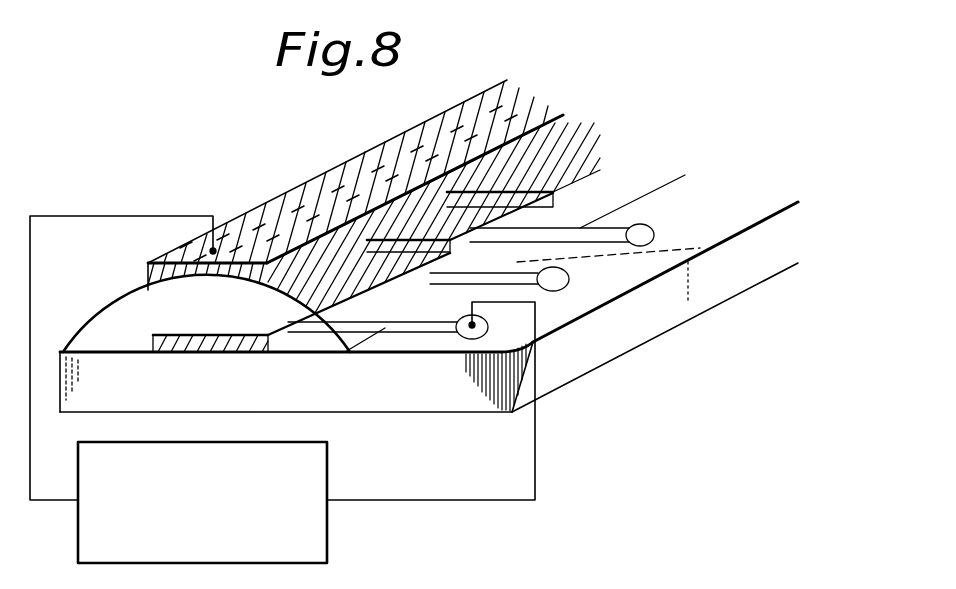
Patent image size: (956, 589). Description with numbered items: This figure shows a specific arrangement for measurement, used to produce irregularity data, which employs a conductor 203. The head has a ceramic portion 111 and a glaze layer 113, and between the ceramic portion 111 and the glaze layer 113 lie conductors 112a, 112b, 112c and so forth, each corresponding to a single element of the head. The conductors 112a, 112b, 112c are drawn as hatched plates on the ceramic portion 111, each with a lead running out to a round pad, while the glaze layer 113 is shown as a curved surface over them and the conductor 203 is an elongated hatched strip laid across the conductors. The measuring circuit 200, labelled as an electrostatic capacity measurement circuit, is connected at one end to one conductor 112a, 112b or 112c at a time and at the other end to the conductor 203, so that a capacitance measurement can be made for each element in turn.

The ceramic portion 111 is at (84, 378).
The conductor 112a is at (272, 320).
The conductor 112b is at (387, 283).
The conductor 112c is at (505, 233).
The glaze layer 113 is at (140, 310).
The measuring circuit 200 is at (328, 532).
The conductor 203 is at (257, 218).